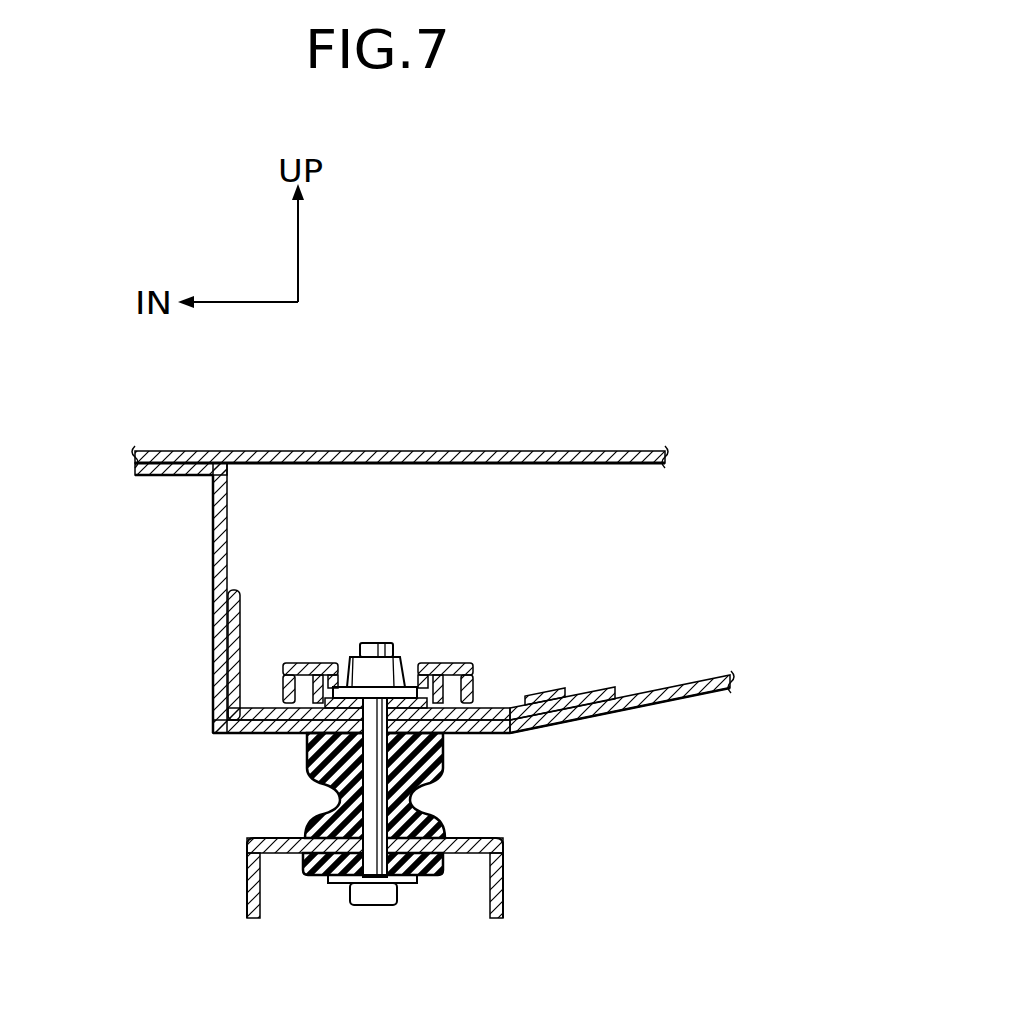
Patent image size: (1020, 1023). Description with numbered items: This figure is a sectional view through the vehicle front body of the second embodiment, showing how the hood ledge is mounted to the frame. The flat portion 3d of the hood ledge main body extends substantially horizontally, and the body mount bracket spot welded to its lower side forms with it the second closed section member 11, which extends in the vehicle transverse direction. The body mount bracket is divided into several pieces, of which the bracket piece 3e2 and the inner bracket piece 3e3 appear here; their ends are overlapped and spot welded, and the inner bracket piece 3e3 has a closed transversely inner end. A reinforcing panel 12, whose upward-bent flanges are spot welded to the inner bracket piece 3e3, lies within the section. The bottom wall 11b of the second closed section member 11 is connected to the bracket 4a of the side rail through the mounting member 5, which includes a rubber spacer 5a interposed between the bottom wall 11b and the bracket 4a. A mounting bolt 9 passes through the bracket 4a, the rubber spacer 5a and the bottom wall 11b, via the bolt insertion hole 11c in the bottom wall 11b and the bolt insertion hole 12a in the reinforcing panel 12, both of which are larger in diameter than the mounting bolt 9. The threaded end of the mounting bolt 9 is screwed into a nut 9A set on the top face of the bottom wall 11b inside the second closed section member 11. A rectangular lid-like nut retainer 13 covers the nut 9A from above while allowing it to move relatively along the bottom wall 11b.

The flat portion 3d is at (477, 451).
The inner bracket piece 3e3 is at (206, 575).
The bracket piece 3e2 is at (668, 716).
The second closed section member 11 is at (548, 545).
The bottom wall 11b is at (240, 735).
The bolt insertion hole 11c is at (312, 789).
The reinforcing panel 12 is at (257, 692).
The bolt insertion hole 12a is at (356, 657).
The nut retainer 13 is at (337, 663).
The mounting bolt 9 is at (373, 906).
The nut 9A is at (407, 664).
The mounting member 5 is at (460, 820).
The rubber spacer 5a is at (310, 742).
The bracket 4a is at (504, 873).